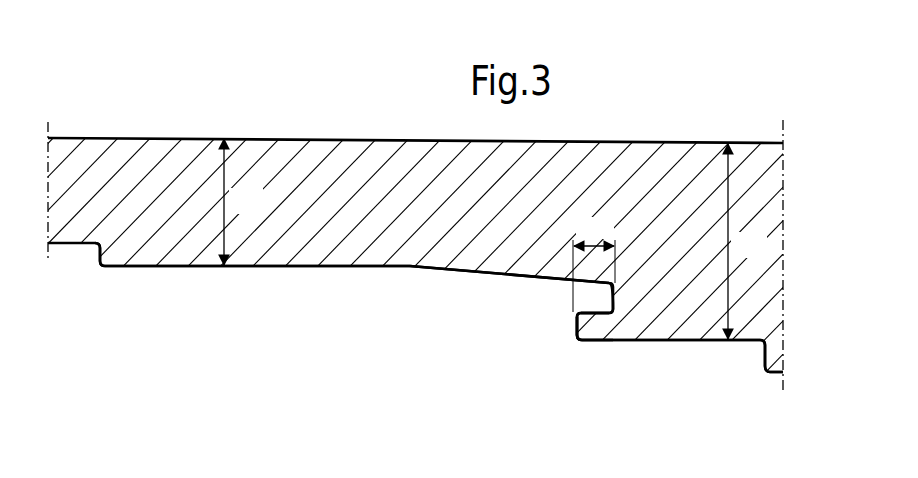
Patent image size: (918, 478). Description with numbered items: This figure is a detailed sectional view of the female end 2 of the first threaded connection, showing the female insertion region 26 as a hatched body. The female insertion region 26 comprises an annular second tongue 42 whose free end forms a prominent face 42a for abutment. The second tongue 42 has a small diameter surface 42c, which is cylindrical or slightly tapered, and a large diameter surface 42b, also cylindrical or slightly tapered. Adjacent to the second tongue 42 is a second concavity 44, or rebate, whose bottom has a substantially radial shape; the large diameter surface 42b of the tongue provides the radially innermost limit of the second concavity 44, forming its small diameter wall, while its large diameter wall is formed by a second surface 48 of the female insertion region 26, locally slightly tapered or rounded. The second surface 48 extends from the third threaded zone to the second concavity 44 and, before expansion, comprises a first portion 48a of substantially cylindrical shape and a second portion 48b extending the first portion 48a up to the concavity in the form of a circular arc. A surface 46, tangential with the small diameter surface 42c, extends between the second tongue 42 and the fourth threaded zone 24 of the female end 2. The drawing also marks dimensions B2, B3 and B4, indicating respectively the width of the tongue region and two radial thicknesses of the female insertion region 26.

The female end 2 is at (112, 93).
The female insertion region 26 is at (415, 255).
The fourth threaded zone 24 is at (779, 357).
The second tongue 42 is at (590, 328).
The prominent face 42a is at (572, 328).
The large diameter surface 42b is at (593, 312).
The small diameter surface 42c is at (588, 341).
The second concavity 44 is at (597, 291).
The surface 46 is at (686, 341).
The second surface 48 is at (265, 268).
The first portion 48a is at (158, 267).
The second portion 48b is at (436, 271).
The width dimension B2 is at (594, 264).
The height dimension B3 is at (243, 202).
The height dimension B4 is at (747, 241).